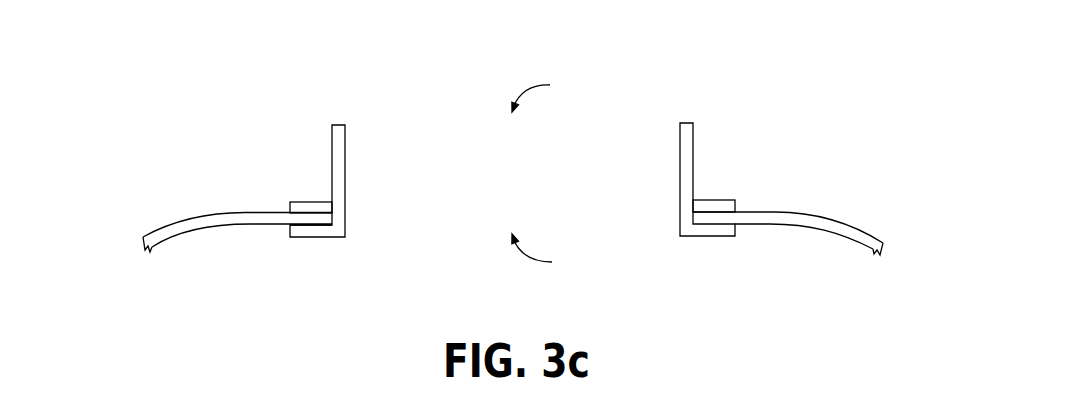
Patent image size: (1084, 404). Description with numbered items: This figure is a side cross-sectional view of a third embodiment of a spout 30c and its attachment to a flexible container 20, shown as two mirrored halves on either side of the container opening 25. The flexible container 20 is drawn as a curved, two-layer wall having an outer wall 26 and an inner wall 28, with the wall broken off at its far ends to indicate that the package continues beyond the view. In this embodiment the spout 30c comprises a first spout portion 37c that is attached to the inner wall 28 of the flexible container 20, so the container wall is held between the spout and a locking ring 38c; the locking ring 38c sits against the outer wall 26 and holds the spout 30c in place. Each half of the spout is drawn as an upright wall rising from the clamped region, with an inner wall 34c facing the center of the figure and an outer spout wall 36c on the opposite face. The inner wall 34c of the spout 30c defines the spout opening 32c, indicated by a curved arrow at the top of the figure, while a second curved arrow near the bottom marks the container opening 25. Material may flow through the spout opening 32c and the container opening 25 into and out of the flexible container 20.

The flexible container 20 is at (495, 228).
The container opening 25 is at (552, 259).
The outer wall 26 is at (235, 212).
The inner wall 28 is at (265, 225).
The spout 30c is at (712, 176).
The spout opening 32c is at (560, 91).
The inner wall of spout 34c is at (680, 183).
The outer spout wall 36c is at (330, 142).
The first spout portion 37c is at (315, 230).
The locking ring 38c is at (317, 207).